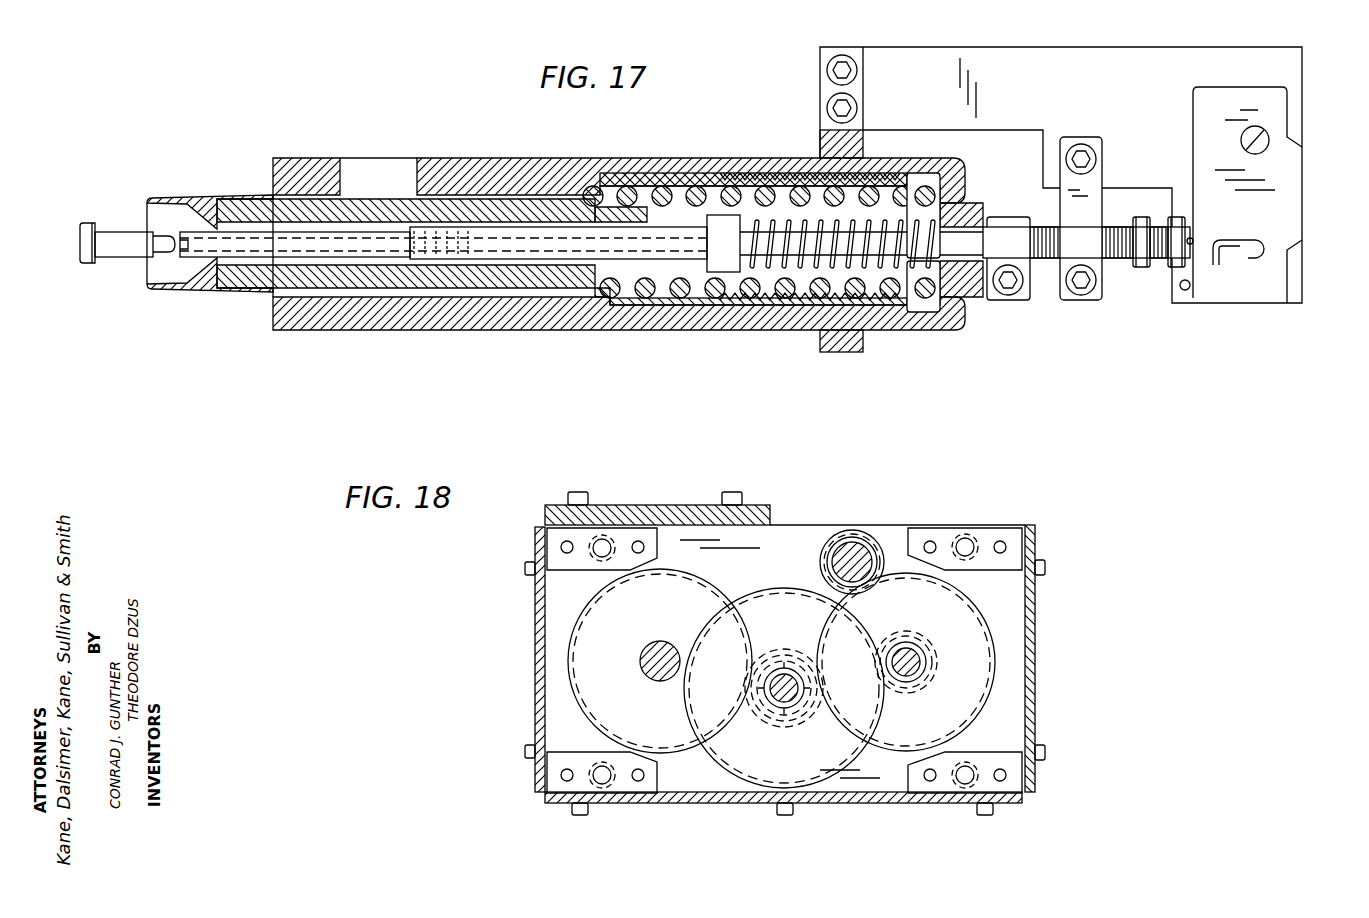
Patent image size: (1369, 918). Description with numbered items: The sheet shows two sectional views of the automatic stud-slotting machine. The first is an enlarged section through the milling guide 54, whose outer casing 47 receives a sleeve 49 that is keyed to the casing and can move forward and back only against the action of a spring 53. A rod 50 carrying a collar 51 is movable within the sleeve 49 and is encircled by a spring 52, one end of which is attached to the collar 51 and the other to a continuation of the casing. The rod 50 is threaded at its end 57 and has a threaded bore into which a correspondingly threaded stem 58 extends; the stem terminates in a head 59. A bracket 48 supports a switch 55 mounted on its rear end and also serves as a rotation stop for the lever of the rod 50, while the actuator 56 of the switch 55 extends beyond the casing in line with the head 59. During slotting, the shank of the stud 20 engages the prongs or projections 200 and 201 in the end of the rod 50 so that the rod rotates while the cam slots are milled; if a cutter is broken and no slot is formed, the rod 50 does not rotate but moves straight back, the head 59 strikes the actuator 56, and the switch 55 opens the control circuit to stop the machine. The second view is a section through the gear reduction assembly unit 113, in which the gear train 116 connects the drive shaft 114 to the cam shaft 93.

In FIG. 17, the stud 20 is at (108, 262).
In FIG. 17, the casing 47 is at (660, 158).
In FIG. 17, the bracket 48 is at (1089, 35).
In FIG. 17, the sleeve 49 is at (250, 297).
In FIG. 17, the rod 50 is at (670, 258).
In FIG. 17, the collar 51 is at (706, 215).
In FIG. 17, the spring 52 is at (810, 222).
In FIG. 17, the spring 53 is at (712, 300).
In FIG. 17, the milling guide 54 is at (375, 242).
In FIG. 17, the switch 55 is at (1290, 178).
In FIG. 17, the actuator 56 is at (1195, 241).
In FIG. 17, the threaded end 57 is at (1050, 262).
In FIG. 17, the threaded stem 58 is at (1164, 265).
In FIG. 17, the head 59 is at (1188, 240).
In FIG. 17, the projection 200 is at (194, 202).
In FIG. 17, the projection 201 is at (172, 288).
In FIG. 18, the cam shaft 93 is at (855, 560).
In FIG. 18, the gear reduction assembly unit 113 is at (1036, 652).
In FIG. 18, the drive shaft 114 is at (660, 682).
In FIG. 18, the gear train 116 is at (790, 592).